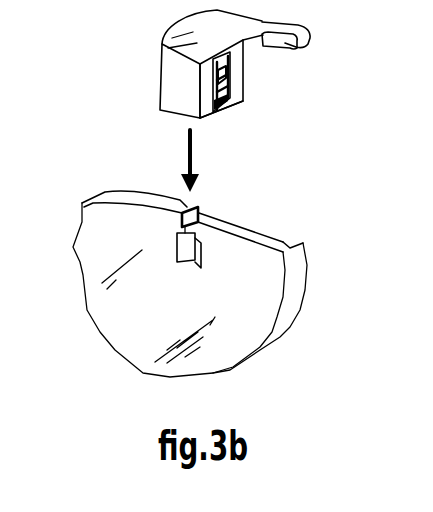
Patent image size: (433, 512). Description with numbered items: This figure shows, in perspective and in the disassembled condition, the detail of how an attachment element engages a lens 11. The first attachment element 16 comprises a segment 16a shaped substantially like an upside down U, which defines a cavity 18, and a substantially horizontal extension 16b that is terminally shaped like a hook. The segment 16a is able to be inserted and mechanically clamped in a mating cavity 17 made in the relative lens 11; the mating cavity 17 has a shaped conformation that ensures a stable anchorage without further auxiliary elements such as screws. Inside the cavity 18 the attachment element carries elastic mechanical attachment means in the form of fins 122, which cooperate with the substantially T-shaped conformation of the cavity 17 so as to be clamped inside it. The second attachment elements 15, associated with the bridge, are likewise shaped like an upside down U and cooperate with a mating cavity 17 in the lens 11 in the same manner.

The second attachment element 15 is at (175, 23).
The first attachment element 16 is at (268, 76).
The segment 16a is at (205, 111).
The extension 16b is at (272, 23).
The cavity 18 is at (228, 110).
The fins 122 is at (232, 79).
The lens 11 is at (275, 317).
The mating cavity 17 is at (199, 212).